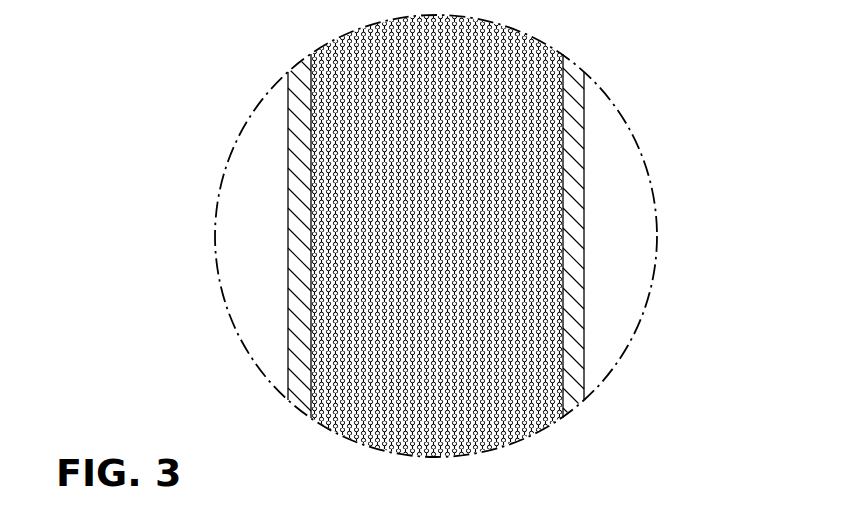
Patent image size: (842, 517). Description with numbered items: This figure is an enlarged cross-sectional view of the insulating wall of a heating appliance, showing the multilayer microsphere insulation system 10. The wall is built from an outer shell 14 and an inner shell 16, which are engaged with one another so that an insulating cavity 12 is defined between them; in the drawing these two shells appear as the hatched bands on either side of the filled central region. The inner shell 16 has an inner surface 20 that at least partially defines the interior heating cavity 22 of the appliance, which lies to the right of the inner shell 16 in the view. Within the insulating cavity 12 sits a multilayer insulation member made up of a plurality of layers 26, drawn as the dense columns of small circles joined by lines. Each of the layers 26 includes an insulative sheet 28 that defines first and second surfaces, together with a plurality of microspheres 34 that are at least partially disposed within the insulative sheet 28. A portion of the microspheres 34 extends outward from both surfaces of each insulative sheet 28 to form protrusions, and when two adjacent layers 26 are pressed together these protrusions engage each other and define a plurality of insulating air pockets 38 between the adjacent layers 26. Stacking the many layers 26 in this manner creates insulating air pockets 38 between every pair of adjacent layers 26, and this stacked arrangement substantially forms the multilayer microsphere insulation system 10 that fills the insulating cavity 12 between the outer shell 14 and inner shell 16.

The multilayer microsphere insulation system 10 is at (560, 134).
The insulating cavity 12 is at (305, 133).
The outer shell 14 is at (293, 257).
The inner shell 16 is at (565, 253).
The inner surface 20 is at (577, 333).
The heating cavity 22 is at (602, 176).
The layers 26 is at (331, 40).
The insulative sheet 28 is at (468, 432).
The microspheres 34 is at (348, 431).
The insulating air pockets 38 is at (381, 433).